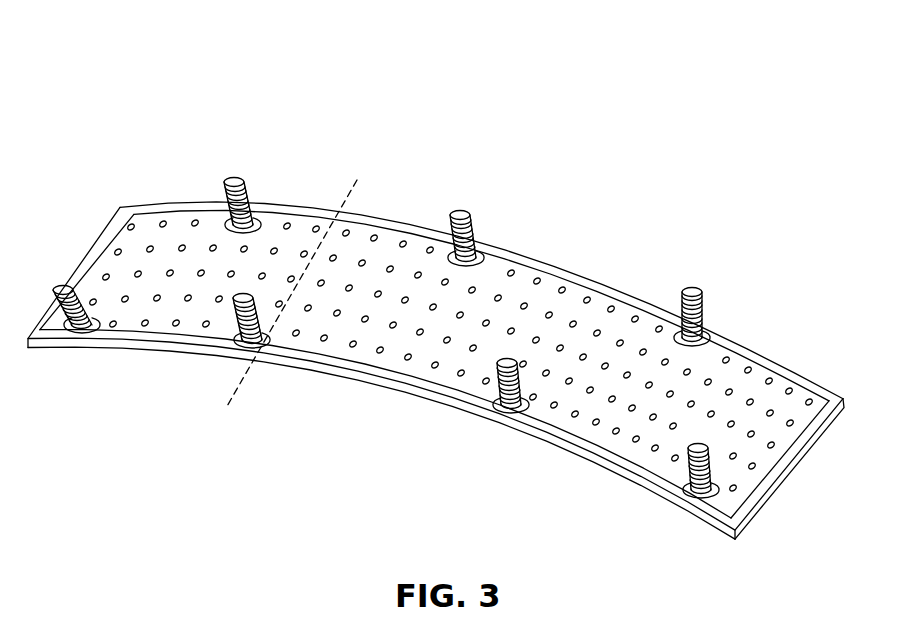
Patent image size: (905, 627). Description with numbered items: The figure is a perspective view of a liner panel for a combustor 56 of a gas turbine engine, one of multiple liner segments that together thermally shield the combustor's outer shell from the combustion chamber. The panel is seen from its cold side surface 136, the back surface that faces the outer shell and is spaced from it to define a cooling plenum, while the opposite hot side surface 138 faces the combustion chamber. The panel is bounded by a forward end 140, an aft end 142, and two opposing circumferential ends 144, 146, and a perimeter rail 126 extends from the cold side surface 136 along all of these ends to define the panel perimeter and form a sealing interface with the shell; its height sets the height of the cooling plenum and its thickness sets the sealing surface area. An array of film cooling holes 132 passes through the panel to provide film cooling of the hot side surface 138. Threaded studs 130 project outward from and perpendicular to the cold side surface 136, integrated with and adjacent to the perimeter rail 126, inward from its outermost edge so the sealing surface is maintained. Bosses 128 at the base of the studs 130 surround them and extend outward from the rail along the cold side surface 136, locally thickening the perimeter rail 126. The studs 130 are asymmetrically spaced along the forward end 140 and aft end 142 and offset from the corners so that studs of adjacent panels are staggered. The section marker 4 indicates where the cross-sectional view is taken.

The combustor 56 is at (448, 322).
The perimeter rail 126 is at (448, 350).
The bosses 128 is at (448, 257).
The studs 130 is at (475, 229).
The film cooling holes 132 is at (748, 370).
The cold side surface 136 is at (478, 355).
The hot side surface 138 is at (611, 491).
The forward end 140 is at (370, 378).
The aft end 142 is at (578, 272).
The circumferential end 144 is at (80, 272).
The circumferential end 146 is at (790, 477).
The section line 4- 4 is at (318, 167).